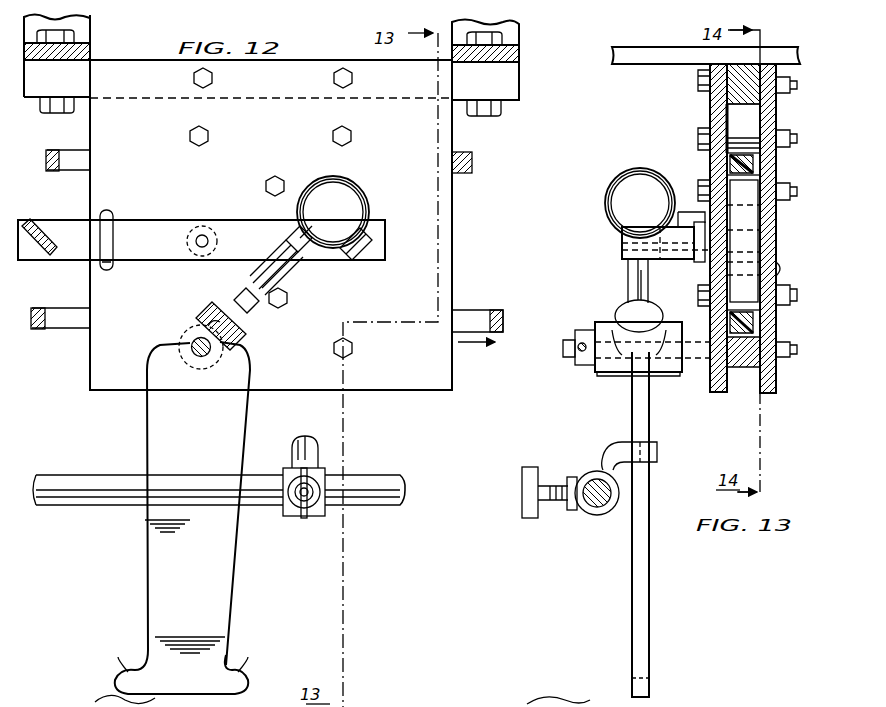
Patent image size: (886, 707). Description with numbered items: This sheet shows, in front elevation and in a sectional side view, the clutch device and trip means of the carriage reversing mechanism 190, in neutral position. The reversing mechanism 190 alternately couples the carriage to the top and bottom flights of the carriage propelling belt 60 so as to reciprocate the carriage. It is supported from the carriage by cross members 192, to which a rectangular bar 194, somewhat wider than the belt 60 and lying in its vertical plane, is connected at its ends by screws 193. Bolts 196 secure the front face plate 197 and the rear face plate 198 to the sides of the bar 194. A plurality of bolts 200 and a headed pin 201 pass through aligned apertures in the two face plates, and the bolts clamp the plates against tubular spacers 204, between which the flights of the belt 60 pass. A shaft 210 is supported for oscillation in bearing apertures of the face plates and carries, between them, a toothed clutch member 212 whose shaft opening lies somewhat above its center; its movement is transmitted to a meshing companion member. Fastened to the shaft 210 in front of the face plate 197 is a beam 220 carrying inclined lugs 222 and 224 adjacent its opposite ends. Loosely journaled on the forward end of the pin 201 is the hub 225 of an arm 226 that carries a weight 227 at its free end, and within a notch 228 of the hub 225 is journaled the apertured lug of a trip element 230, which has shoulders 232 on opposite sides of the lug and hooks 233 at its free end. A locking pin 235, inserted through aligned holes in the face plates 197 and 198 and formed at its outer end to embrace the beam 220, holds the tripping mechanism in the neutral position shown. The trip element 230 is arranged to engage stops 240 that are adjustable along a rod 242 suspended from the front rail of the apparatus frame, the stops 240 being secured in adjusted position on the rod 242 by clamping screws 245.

In FIG. 12, the carriage propelling belt 60 is at (472, 160).
In FIG. 13, the carriage propelling belt 60 is at (755, 165).
In FIG. 12, the reversing mechanism 190 is at (458, 280).
In FIG. 13, the reversing mechanism 190 is at (706, 157).
In FIG. 12, the cross members 192 is at (85, 55).
In FIG. 13, the cross members 192 is at (650, 57).
In FIG. 12, the screws 193 is at (66, 113).
In FIG. 12, the rectangular bar 194 is at (515, 82).
In FIG. 13, the rectangular bar 194 is at (752, 72).
In FIG. 12, the bolts 196 is at (200, 78).
In FIG. 13, the bolts 196 is at (698, 80).
In FIG. 12, the front face plate 197 is at (454, 188).
In FIG. 13, the front face plate 197 is at (718, 105).
In FIG. 13, the rear face plate 198 is at (776, 390).
In FIG. 12, the bolts 200 is at (208, 134).
In FIG. 13, the bolts 200 is at (698, 138).
In FIG. 12, the headed pin 201 is at (201, 357).
In FIG. 13, the headed pin 201 is at (570, 357).
In FIG. 13, the tubular spacers 204 is at (745, 128).
In FIG. 12, the shaft 210 is at (196, 241).
In FIG. 13, the clutch member 212 is at (748, 245).
In FIG. 12, the beam 220 is at (128, 225).
In FIG. 13, the beam 220 is at (652, 238).
In FIG. 12, the inclined lug 222 is at (66, 220).
In FIG. 12, the inclined lug 224 is at (362, 258).
In FIG. 13, the inclined lug 224 is at (625, 242).
In FIG. 12, the hub 225 is at (222, 302).
In FIG. 13, the hub 225 is at (607, 323).
In FIG. 12, the arm 226 is at (285, 268).
In FIG. 13, the arm 226 is at (632, 283).
In FIG. 12, the weight 227 is at (356, 195).
In FIG. 13, the weight 227 is at (615, 185).
In FIG. 12, the notch 228 is at (198, 320).
In FIG. 13, the notch 228 is at (620, 372).
In FIG. 12, the trip element 230 is at (160, 405).
In FIG. 13, the trip element 230 is at (637, 557).
In FIG. 12, the shoulders 232 is at (162, 345).
In FIG. 12, the hooks 233 is at (118, 665).
In FIG. 13, the hooks 233 is at (643, 677).
In FIG. 12, the locking pin 235 is at (106, 270).
In FIG. 13, the locking pin 235 is at (653, 252).
In FIG. 12, the stops 240 is at (302, 438).
In FIG. 13, the stops 240 is at (612, 440).
In FIG. 12, the rod 242 is at (400, 490).
In FIG. 13, the rod 242 is at (600, 507).
In FIG. 12, the clamping screws 245 is at (313, 490).
In FIG. 13, the clamping screws 245 is at (538, 510).